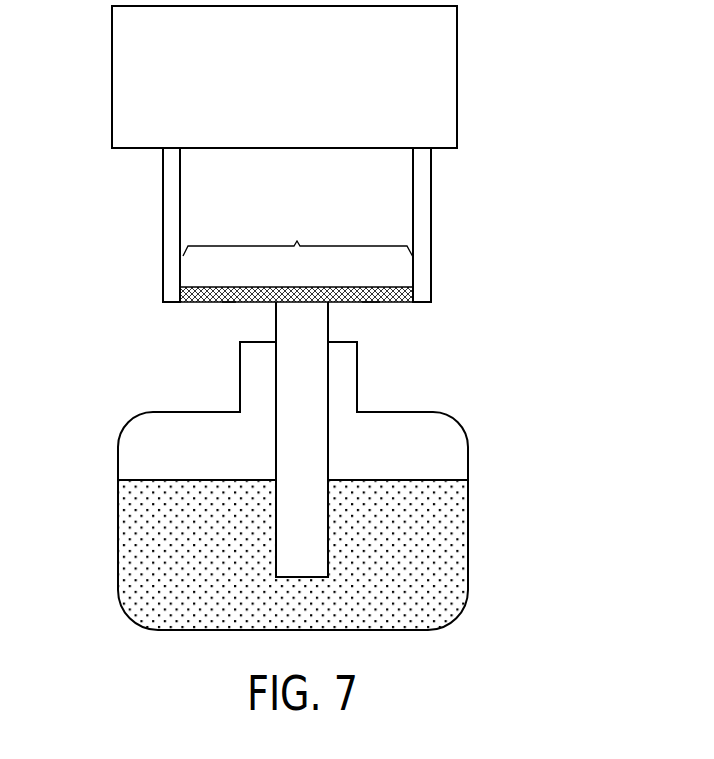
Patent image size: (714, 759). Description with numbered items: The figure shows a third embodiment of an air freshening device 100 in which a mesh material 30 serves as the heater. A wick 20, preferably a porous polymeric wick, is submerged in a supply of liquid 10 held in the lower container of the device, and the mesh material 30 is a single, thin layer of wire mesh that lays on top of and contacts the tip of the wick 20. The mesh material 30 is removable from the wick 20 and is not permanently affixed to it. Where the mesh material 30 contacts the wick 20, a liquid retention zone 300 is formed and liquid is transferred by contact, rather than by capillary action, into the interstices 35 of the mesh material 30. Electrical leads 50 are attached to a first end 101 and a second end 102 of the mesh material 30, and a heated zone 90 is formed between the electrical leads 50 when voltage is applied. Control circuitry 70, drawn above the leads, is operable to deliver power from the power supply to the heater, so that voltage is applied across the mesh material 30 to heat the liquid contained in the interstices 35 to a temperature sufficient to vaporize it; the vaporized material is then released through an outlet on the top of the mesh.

The control circuitry 70 is at (441, 48).
The electrical leads 50 is at (163, 213).
The heated zone 90 is at (298, 233).
The liquid retention zone 300 is at (303, 285).
The first end 101 is at (190, 302).
The second end 102 is at (395, 303).
The interstices 35 is at (228, 303).
The mesh material 30 is at (375, 312).
The wick 20 is at (295, 452).
The air freshening device 100 is at (440, 408).
The liquid 10 is at (445, 543).